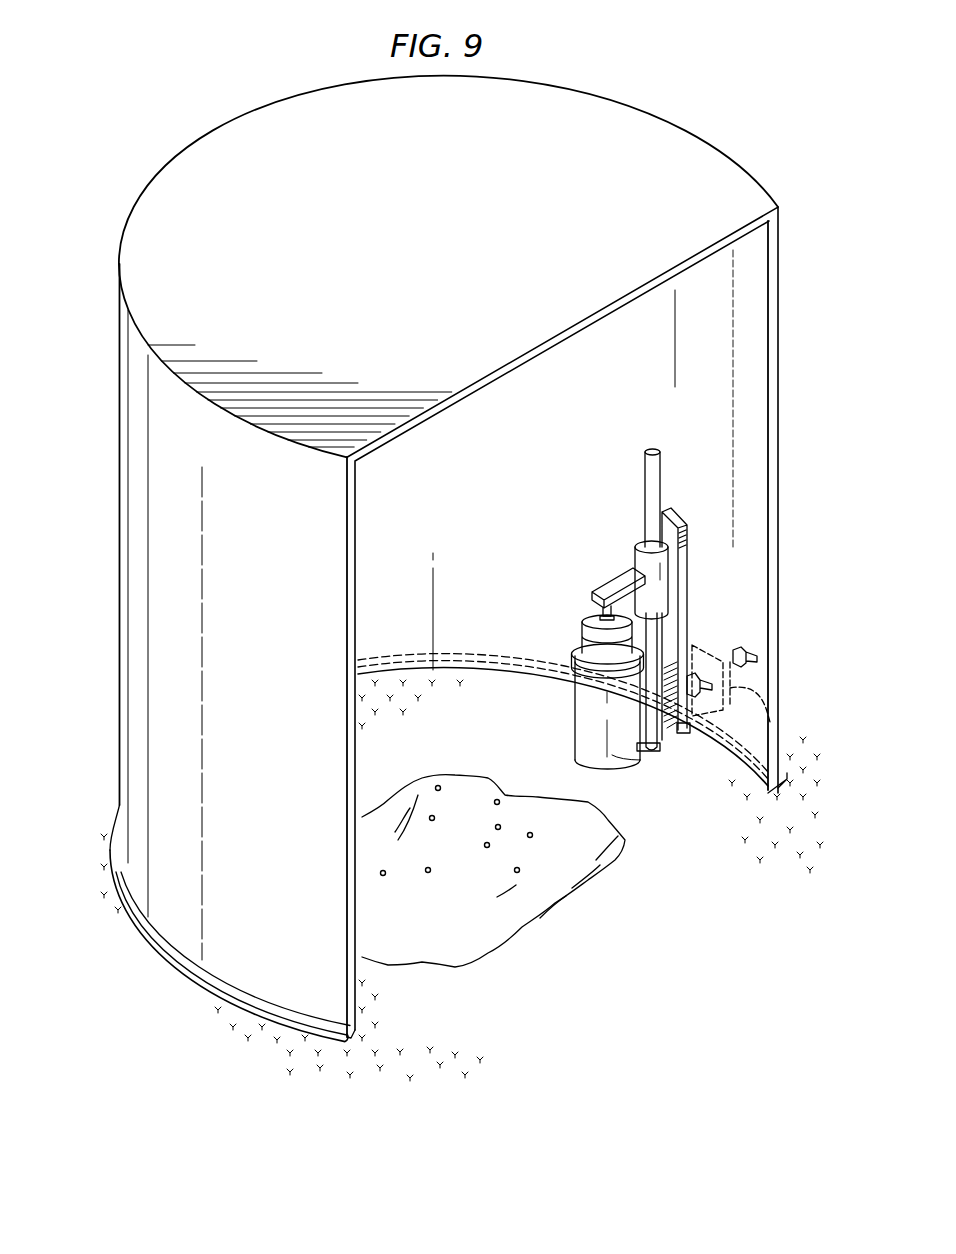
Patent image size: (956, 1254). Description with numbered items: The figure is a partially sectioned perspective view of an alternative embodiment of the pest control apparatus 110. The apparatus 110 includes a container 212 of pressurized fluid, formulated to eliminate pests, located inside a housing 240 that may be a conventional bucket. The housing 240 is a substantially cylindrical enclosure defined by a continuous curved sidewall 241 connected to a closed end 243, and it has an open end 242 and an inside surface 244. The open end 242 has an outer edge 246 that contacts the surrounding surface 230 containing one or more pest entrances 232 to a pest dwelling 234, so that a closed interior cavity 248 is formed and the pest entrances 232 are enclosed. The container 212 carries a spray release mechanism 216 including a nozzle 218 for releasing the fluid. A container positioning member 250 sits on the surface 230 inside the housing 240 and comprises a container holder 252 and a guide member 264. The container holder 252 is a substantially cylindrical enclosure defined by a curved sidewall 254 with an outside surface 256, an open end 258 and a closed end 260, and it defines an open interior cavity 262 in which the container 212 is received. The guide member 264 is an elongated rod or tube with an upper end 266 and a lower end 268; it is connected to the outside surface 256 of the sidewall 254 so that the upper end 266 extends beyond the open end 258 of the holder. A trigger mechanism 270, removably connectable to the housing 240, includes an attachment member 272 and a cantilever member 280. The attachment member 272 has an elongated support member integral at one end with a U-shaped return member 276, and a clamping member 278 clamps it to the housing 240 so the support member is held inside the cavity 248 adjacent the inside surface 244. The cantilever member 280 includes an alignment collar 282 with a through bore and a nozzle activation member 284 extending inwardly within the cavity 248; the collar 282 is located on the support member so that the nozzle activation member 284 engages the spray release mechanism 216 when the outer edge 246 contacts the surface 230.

The apparatus 110 is at (167, 91).
The closed end 243 is at (457, 258).
The closed interior cavity 248 is at (749, 382).
The inside surface 244 is at (752, 444).
The housing 240 is at (119, 509).
The sidewall 241 is at (128, 608).
The outer edge 246 is at (217, 1003).
The surface 230 is at (407, 695).
The pest dwelling 234 is at (460, 778).
The pest entrances 232 is at (487, 845).
The open end 242 is at (661, 866).
The upper end 266 is at (652, 448).
The guide member 264 is at (647, 493).
The alignment collar 282 is at (665, 574).
The cantilever member 280 is at (639, 546).
The nozzle activation member 284 is at (623, 578).
The nozzle 218 is at (598, 592).
The spray release mechanism 216 is at (600, 612).
The trigger mechanism 270 is at (673, 515).
The attachment member 272 is at (688, 622).
The lower end 268 is at (661, 750).
The U-shaped return member 276 is at (770, 720).
The clamping member 278 is at (758, 652).
The container positioning member 250 is at (609, 772).
The container 212 is at (579, 641).
The open end 258 is at (577, 653).
The open interior cavity 262 is at (577, 673).
The curved sidewall 254 is at (572, 710).
The container holder 252 is at (571, 733).
The closed end 260 is at (595, 764).
The outside surface 256 is at (622, 756).